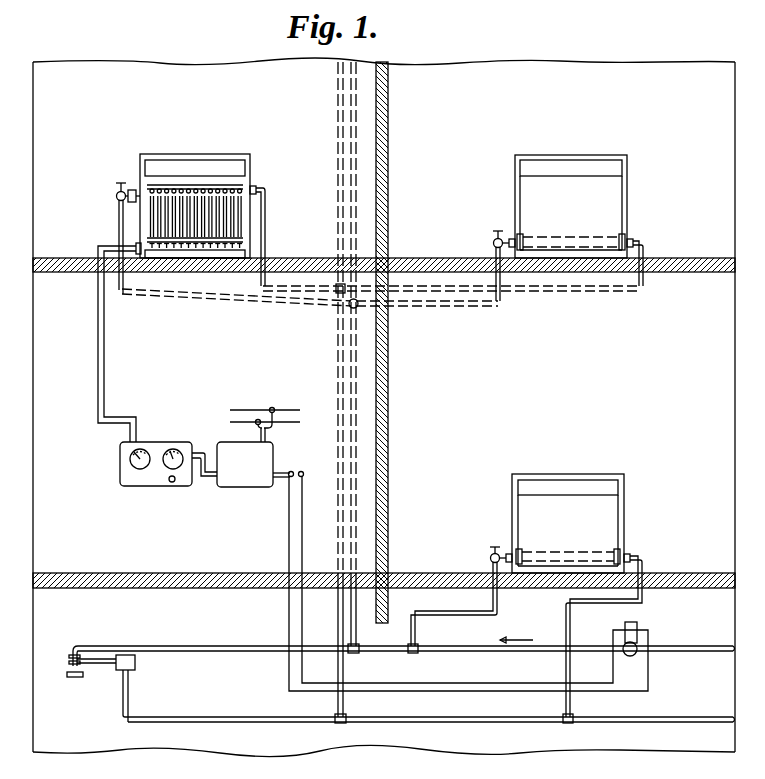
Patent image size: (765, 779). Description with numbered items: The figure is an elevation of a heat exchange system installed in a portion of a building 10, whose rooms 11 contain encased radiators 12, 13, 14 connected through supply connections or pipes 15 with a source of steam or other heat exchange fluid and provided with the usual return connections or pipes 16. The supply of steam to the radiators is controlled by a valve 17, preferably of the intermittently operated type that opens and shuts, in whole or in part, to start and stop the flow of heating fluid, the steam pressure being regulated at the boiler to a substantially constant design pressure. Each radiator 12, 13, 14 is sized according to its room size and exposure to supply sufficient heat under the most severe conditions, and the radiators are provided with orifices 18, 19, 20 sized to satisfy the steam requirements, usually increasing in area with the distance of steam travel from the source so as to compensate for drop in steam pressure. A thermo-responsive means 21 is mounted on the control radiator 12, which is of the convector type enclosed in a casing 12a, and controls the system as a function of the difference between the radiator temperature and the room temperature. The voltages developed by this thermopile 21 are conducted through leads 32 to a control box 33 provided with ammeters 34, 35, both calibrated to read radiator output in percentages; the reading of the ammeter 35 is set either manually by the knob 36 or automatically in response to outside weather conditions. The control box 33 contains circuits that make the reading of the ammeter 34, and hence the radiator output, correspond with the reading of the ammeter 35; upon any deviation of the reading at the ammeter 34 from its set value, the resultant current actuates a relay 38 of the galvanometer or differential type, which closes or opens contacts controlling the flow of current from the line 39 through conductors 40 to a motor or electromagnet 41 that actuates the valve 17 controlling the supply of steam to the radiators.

The building 10 is at (391, 441).
The rooms 11 is at (52, 543).
The control radiator 12 is at (218, 207).
The casing 12a is at (132, 188).
The radiator 13 is at (628, 215).
The radiator 14 is at (626, 527).
The supply pipes 15 is at (222, 646).
The return pipes 16 is at (434, 725).
The valve 17 is at (640, 650).
The orifice 18 is at (495, 553).
The orifice 19 is at (505, 238).
The orifice 20 is at (127, 192).
The thermo-responsive means 21 is at (236, 212).
The leads 32 is at (100, 366).
The control box 33 is at (161, 457).
The ammeter 34 is at (141, 448).
The ammeter 35 is at (175, 448).
The knob 36 is at (173, 483).
The relay 38 is at (229, 480).
The line 39 is at (246, 409).
The conductors 40 is at (289, 520).
The electromagnet 41 is at (634, 624).